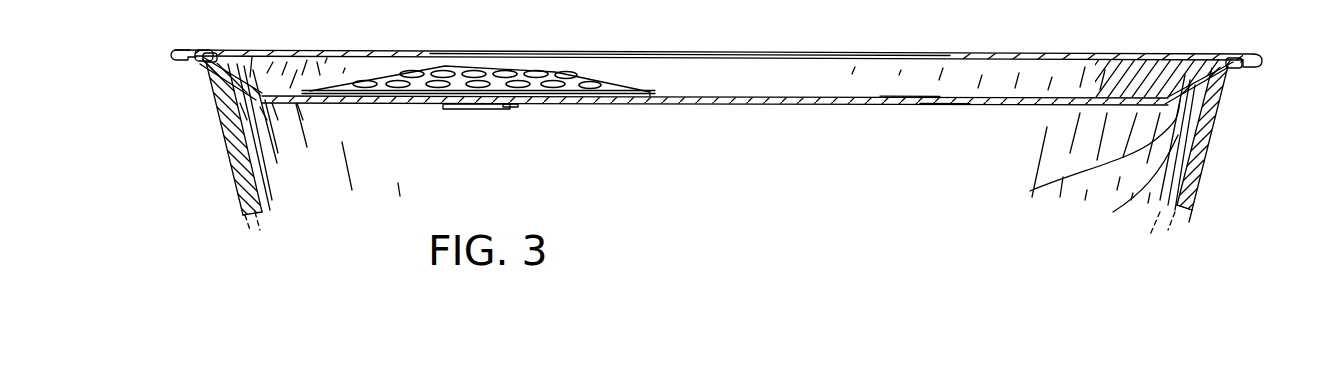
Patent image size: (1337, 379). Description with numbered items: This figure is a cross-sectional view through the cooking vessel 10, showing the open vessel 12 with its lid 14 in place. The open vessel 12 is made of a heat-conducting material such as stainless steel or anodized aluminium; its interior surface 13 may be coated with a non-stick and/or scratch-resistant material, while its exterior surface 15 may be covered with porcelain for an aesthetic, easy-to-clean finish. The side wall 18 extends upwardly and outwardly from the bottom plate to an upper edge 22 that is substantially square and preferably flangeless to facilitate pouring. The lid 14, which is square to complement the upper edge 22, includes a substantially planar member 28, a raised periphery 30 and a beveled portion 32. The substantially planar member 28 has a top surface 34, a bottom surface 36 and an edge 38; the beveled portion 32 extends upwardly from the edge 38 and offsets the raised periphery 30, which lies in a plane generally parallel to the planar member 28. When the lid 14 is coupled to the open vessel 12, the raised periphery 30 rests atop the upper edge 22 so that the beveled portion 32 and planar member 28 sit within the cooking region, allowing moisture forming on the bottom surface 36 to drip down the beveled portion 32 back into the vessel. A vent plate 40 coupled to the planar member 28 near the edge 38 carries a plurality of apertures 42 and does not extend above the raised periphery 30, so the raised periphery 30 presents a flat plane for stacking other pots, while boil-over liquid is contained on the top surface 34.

The cooking vessel 10 is at (747, 136).
The open vessel 12 is at (1197, 213).
The interior surface 13 is at (257, 190).
The lid 14 is at (268, 44).
The exterior surface 15 is at (231, 168).
The side wall 18 is at (1188, 174).
The upper edge 22 is at (1217, 110).
The substantially planar member 28 is at (855, 107).
The raised periphery 30 is at (1026, 51).
The beveled portion 32 is at (1130, 186).
The top surface 34 is at (912, 100).
The bottom surface 36 is at (945, 103).
The edge 38 is at (1088, 160).
The vent plate 40 is at (481, 81).
The apertures 42 is at (582, 104).